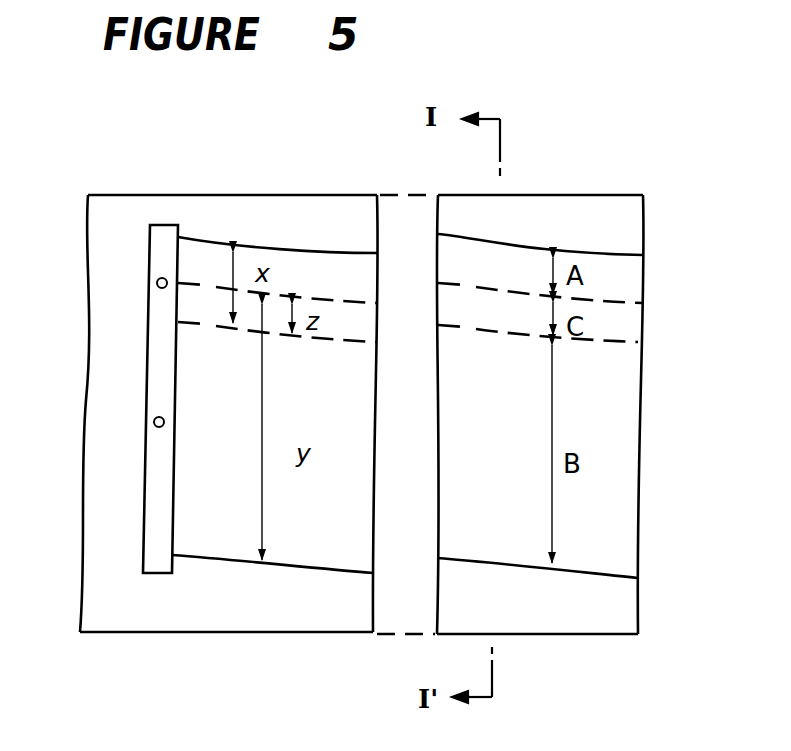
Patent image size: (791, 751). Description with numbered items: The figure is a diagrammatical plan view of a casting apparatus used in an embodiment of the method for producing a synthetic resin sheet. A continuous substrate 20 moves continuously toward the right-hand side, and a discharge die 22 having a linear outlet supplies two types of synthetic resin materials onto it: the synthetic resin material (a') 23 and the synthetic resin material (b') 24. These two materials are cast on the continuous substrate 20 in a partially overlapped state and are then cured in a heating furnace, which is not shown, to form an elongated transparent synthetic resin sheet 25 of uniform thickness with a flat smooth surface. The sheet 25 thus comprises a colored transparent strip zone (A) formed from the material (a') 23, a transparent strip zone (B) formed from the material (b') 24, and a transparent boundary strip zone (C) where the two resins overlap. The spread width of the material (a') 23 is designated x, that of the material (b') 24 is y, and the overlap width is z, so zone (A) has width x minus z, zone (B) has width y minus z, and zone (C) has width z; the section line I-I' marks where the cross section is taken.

The continuous substrate 20 is at (318, 218).
The discharge die 22 is at (158, 460).
The synthetic resin material (a') 23 is at (200, 267).
The synthetic resin material (b') 24 is at (220, 542).
The synthetic resin sheet 25 is at (605, 390).